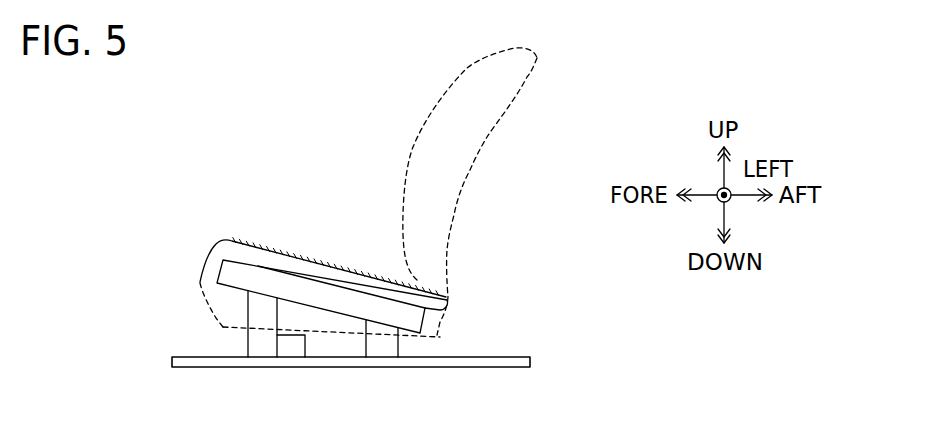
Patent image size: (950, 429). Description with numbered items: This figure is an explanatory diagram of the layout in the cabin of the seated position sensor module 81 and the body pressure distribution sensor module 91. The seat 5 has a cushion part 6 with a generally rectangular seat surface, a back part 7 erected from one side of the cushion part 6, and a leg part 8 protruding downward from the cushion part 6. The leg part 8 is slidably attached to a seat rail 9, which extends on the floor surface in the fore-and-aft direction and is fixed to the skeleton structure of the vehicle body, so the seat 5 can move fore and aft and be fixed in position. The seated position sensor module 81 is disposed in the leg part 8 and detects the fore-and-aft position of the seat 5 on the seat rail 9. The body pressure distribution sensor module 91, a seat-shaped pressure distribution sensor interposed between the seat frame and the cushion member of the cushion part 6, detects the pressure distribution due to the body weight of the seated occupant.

The seat 5 is at (562, 263).
The cushion part 6 is at (452, 307).
The back part 7 is at (449, 250).
The leg part 8 is at (250, 328).
The seated position sensor module 81 is at (311, 346).
The seat rail 9 is at (531, 361).
The body pressure distribution sensor module 91 is at (297, 259).